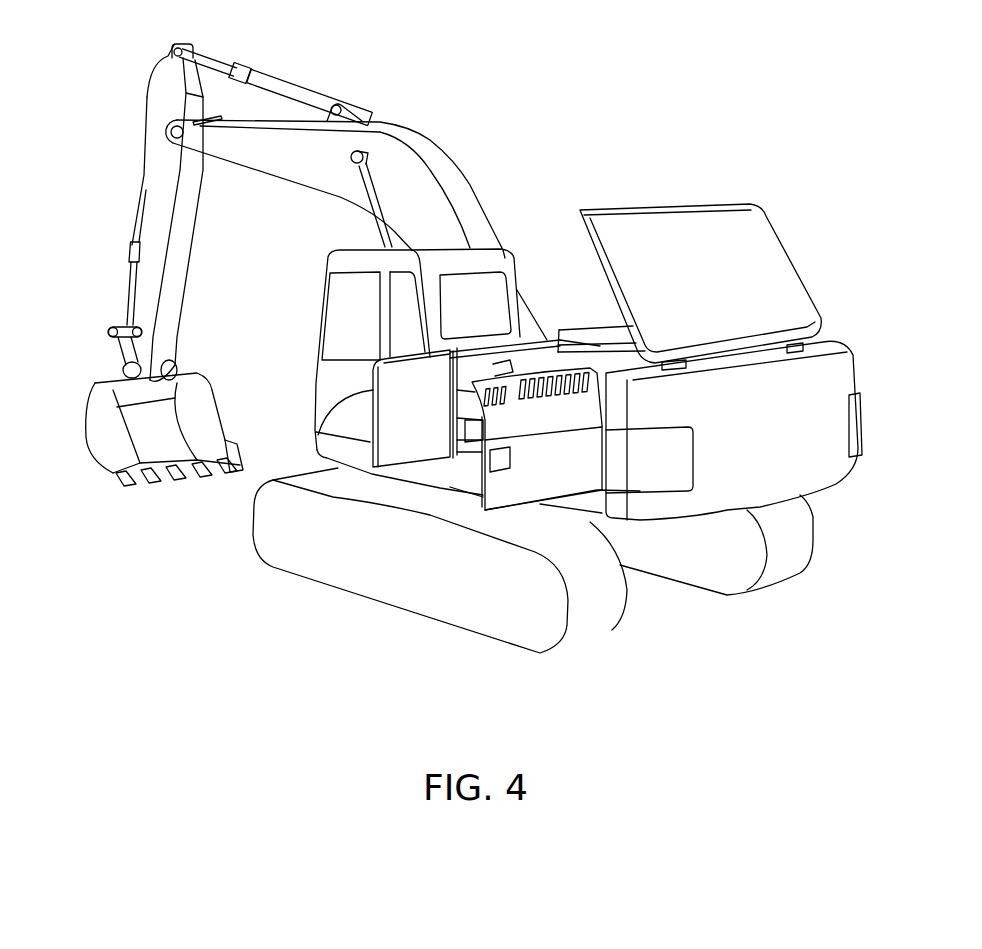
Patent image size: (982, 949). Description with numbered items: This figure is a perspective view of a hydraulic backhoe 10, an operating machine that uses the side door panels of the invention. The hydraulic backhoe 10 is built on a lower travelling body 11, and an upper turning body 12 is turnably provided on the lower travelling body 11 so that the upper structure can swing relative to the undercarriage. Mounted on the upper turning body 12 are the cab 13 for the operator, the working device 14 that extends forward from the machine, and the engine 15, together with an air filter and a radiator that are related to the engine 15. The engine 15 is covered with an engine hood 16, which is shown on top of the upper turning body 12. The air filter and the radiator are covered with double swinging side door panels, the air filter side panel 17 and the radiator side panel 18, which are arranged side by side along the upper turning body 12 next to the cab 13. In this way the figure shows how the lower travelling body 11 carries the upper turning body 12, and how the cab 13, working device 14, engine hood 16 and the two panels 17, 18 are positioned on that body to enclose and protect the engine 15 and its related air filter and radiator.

The hydraulic backhoe 10 is at (541, 109).
The lower travelling body 11 is at (267, 540).
The upper turning body 12 is at (326, 441).
The cab 13 is at (335, 263).
The working device 14 is at (404, 131).
The engine 15 is at (608, 327).
The engine hood 16 is at (682, 213).
The air filter side panel 17 is at (387, 395).
The radiator side panel 18 is at (480, 383).